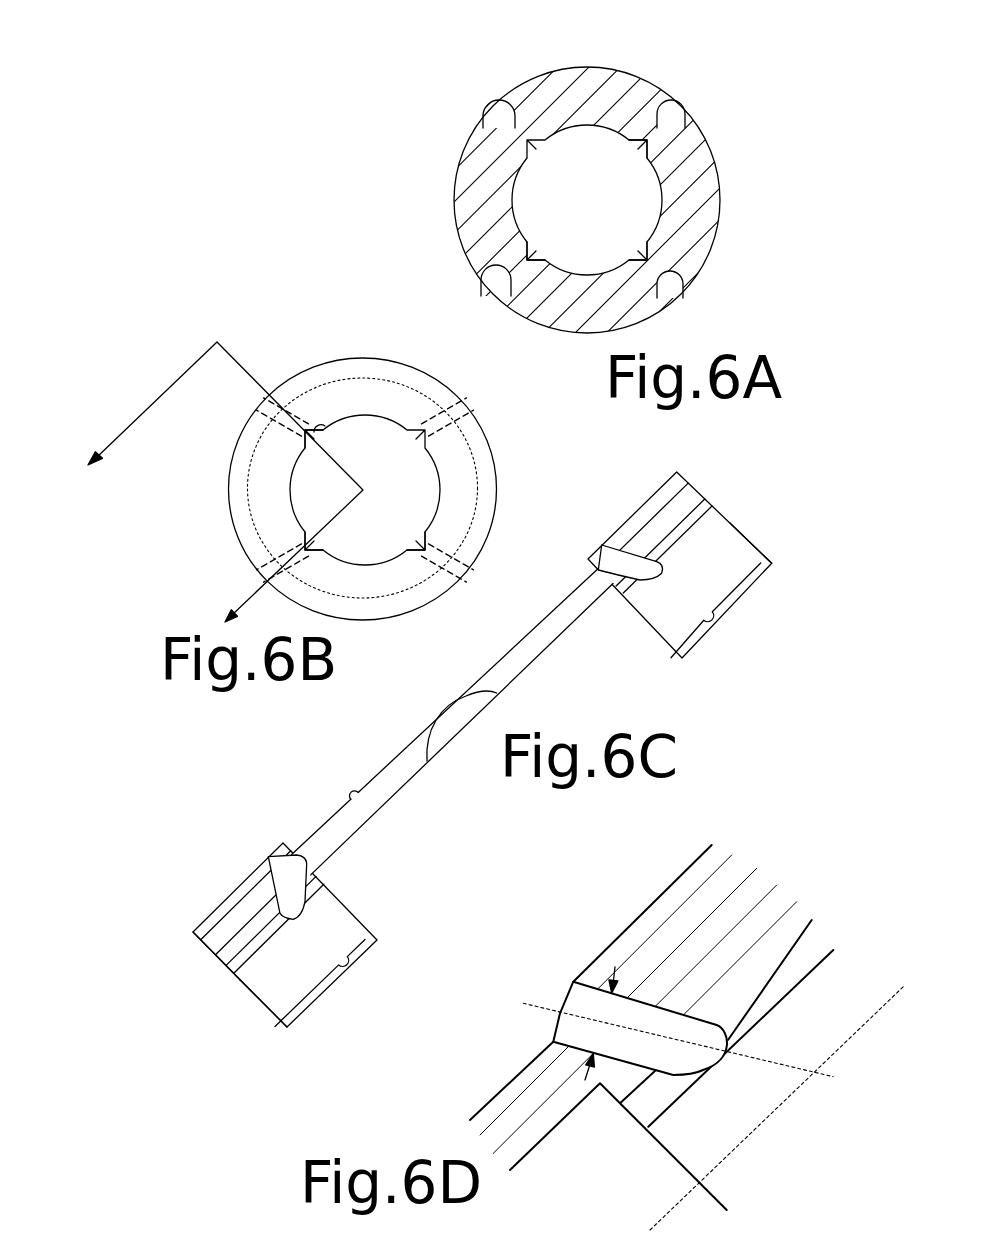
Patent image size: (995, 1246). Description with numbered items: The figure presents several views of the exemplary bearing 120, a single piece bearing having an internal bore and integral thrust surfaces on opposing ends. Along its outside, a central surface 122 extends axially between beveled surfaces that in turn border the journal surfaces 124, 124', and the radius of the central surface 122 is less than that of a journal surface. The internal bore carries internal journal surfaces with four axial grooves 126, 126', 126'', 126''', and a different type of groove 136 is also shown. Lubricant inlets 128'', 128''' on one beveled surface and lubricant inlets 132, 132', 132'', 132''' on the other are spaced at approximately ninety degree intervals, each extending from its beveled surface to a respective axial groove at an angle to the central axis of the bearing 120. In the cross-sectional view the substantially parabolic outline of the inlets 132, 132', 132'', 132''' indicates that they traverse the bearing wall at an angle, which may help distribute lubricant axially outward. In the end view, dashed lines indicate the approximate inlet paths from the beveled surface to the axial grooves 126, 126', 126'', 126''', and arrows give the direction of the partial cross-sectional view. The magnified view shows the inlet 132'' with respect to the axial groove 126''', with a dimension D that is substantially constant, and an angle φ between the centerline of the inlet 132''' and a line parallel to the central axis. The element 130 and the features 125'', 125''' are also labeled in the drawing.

In FIG. 6A, the bearing 120 is at (555, 301).
In FIG. 6B, the bearing 120 is at (310, 458).
In FIG. 6C, the bearing 120 is at (488, 754).
In FIG. 6D, the bearing 120 is at (686, 1029).
In FIG. 6C, the central surface 122 is at (450, 723).
In FIG. 6C, the journal surface 124 is at (710, 557).
In FIG. 6D, the journal surface 124 is at (684, 1027).
In FIG. 6C, the journal surface 124' is at (282, 948).
In FIG. 6C, the head face 125'' is at (246, 1016).
In FIG. 6C, the head face 125''' is at (194, 967).
In FIG. 6A, the axial groove 126 is at (587, 200).
In FIG. 6B, the axial groove 126 is at (365, 490).
In FIG. 6A, the axial groove 126' is at (616, 148).
In FIG. 6B, the axial groove 126' is at (390, 529).
In FIG. 6A, the axial groove 126'' is at (565, 240).
In FIG. 6B, the axial groove 126'' is at (346, 539).
In FIG. 6C, the axial groove 126'' is at (786, 543).
In FIG. 6A, the axial groove 126''' is at (611, 252).
In FIG. 6B, the axial groove 126''' is at (352, 441).
In FIG. 6C, the axial groove 126''' is at (704, 538).
In FIG. 6D, the axial groove 126''' is at (773, 1015).
In FIG. 6C, the lubricant inlet 128'' is at (353, 983).
In FIG. 6C, the lubricant inlet 128''' is at (249, 878).
In FIG. 6B, the bump 130 is at (327, 423).
In FIG. 6C, the bump 130 is at (437, 718).
In FIG. 6A, the lubricant inlet 132 is at (470, 101).
In FIG. 6B, the lubricant inlet 132 is at (478, 411).
In FIG. 6A, the lubricant inlet 132' is at (706, 105).
In FIG. 6B, the lubricant inlet 132' is at (476, 573).
In FIG. 6A, the lubricant inlet 132'' is at (457, 290).
In FIG. 6B, the lubricant inlet 132'' is at (247, 568).
In FIG. 6C, the lubricant inlet 132'' is at (723, 610).
In FIG. 6A, the lubricant inlet 132''' is at (707, 296).
In FIG. 6B, the lubricant inlet 132''' is at (245, 410).
In FIG. 6C, the lubricant inlet 132''' is at (592, 559).
In FIG. 6D, the lubricant inlet 132''' is at (606, 1019).
In FIG. 6C, the groove 136 is at (353, 800).